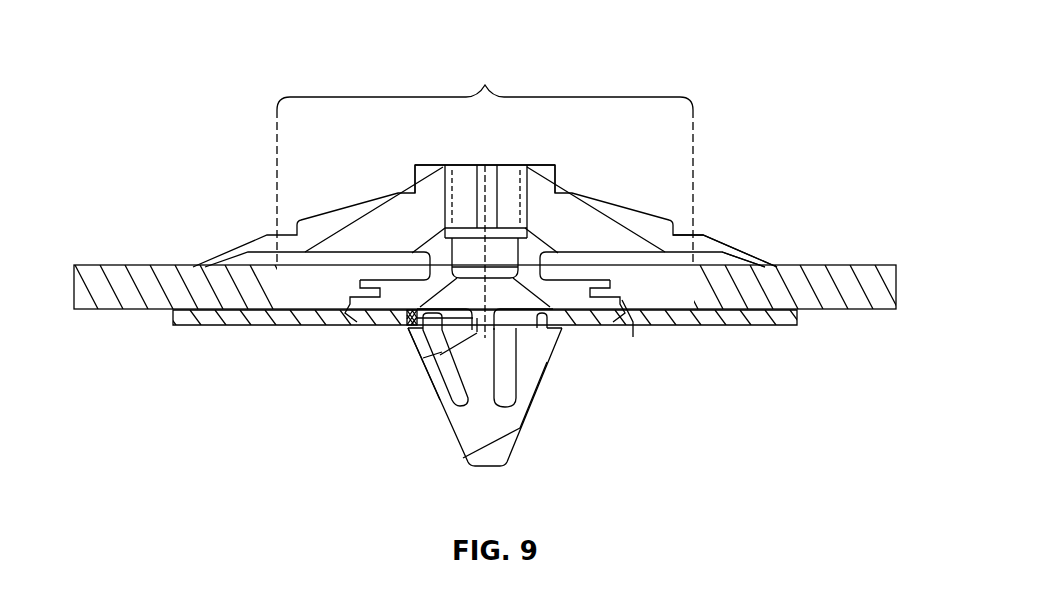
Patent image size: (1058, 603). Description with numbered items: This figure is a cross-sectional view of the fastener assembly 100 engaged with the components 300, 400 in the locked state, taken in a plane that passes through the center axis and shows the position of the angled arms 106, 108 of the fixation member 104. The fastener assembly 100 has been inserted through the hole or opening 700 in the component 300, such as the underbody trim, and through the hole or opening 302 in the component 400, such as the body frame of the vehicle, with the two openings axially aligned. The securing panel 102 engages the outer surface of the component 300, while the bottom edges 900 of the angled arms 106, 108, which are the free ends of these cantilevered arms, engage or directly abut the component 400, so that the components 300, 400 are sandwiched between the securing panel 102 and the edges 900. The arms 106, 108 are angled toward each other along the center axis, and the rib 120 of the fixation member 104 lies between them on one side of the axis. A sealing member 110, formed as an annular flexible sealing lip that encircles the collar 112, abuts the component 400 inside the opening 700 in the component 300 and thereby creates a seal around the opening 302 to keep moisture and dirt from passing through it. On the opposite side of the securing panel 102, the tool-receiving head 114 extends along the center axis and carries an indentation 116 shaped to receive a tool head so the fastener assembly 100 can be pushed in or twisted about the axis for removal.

The hole or opening 700 is at (485, 157).
The fastener assembly 100 is at (383, 163).
The indentation 116 is at (470, 176).
The tool-receiving head 114 is at (539, 168).
The collar 112 is at (582, 287).
The securing panel 102 is at (725, 240).
The component 300 is at (855, 264).
The bottom edges 900 is at (387, 323).
The fixation member 104 is at (298, 320).
The hole or opening 302 is at (442, 375).
The sealing member 110 is at (638, 320).
The component 400 is at (786, 323).
The angled arm 108 is at (445, 392).
The angled arm 106 is at (528, 390).
The rib 120 is at (456, 441).